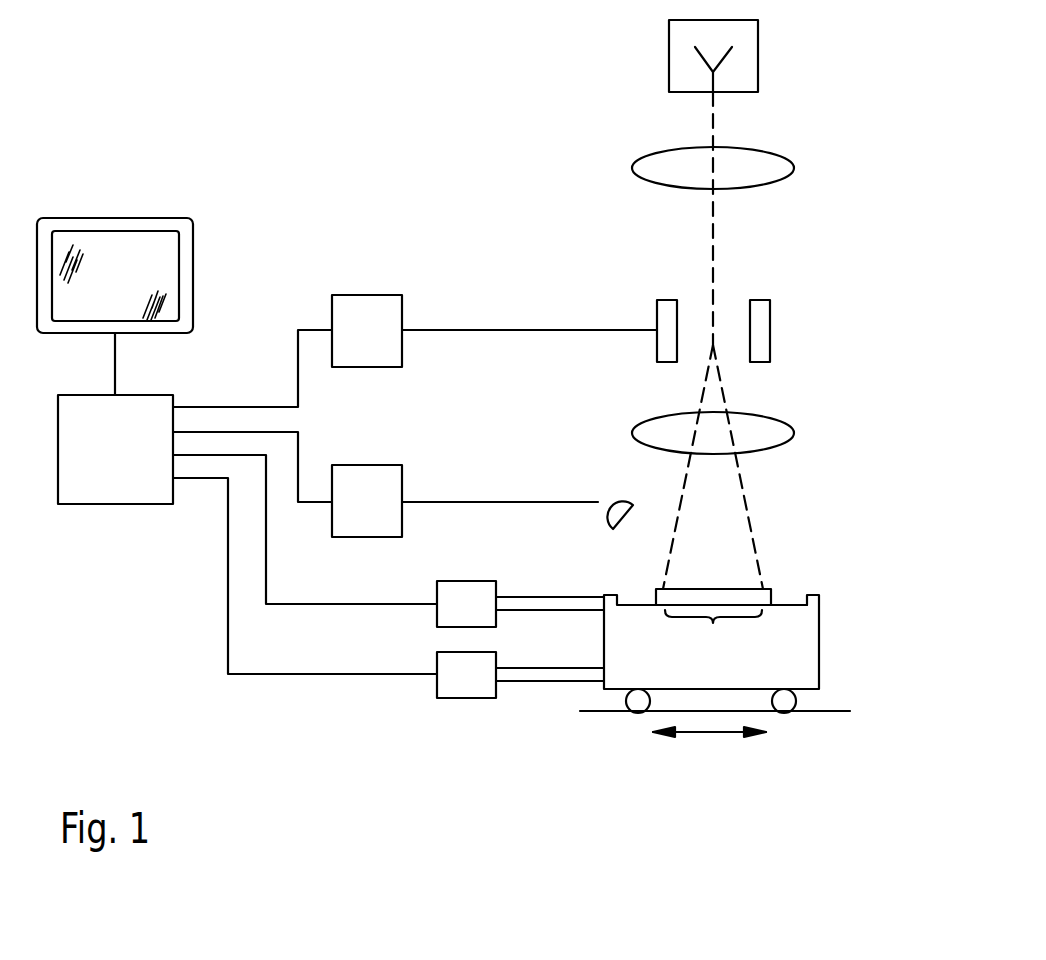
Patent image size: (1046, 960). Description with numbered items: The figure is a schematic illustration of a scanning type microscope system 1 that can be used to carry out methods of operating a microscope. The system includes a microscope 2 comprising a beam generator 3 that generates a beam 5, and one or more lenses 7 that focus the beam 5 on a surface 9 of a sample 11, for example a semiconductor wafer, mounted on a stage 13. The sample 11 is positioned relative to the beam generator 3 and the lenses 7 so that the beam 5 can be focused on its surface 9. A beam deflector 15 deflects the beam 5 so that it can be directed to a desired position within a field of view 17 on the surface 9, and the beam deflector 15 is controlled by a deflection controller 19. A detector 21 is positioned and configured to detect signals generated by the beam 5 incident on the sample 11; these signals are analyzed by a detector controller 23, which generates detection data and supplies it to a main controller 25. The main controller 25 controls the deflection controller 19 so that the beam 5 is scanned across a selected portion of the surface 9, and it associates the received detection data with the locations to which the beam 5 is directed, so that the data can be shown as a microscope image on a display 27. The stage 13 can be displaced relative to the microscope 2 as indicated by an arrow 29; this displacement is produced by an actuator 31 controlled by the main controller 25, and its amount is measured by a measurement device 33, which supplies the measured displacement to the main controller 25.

The scanning type microscope system 1 is at (841, 91).
The microscope 2 is at (851, 351).
The beam generator 3 is at (758, 57).
The beam 5 is at (713, 130).
The lenses 7 is at (794, 168).
The surface 9 is at (764, 590).
The sample 11 is at (773, 600).
The stage 13 is at (819, 648).
The beam deflector 15 is at (770, 332).
The field of view 17 is at (713, 634).
The deflection controller 19 is at (366, 295).
The detector 21 is at (612, 495).
The detector controller 23 is at (366, 465).
The main controller 25 is at (115, 505).
The display 27 is at (115, 218).
The arrow 29 is at (709, 736).
The actuator 31 is at (463, 700).
The measurement device 33 is at (470, 580).